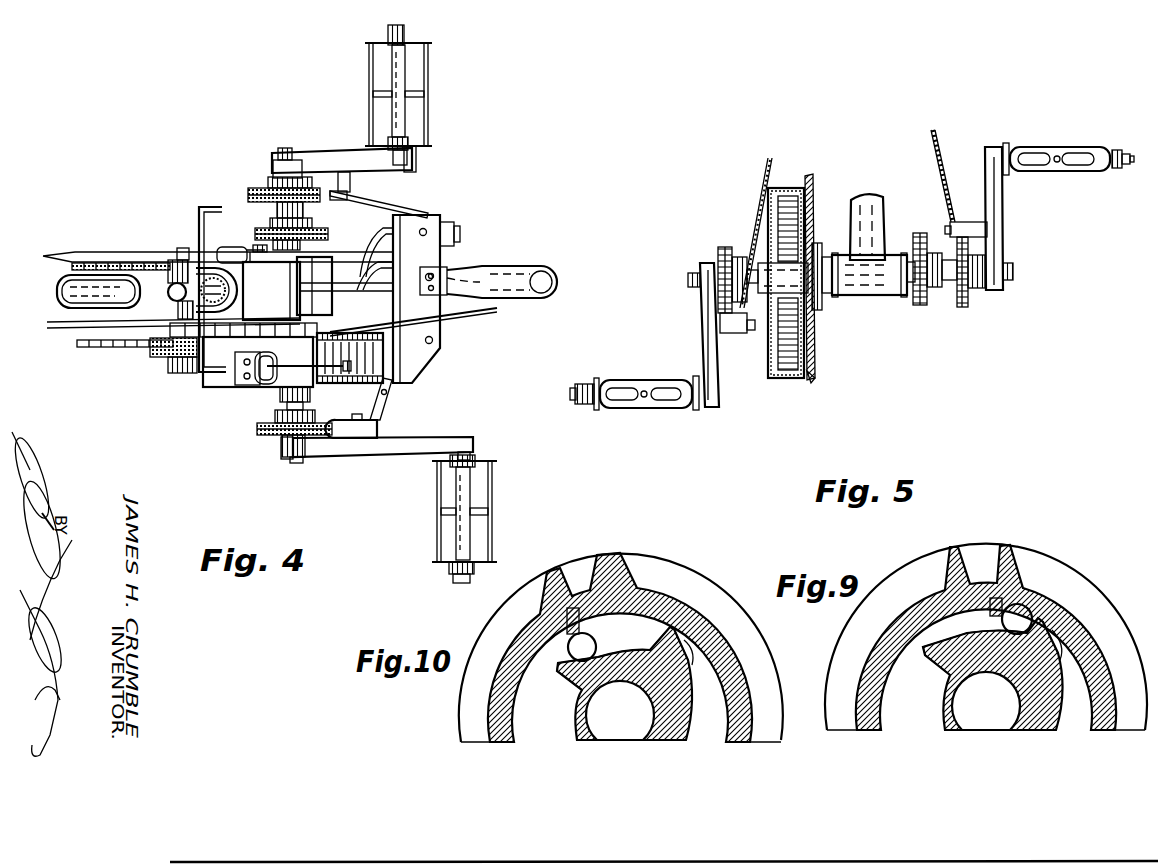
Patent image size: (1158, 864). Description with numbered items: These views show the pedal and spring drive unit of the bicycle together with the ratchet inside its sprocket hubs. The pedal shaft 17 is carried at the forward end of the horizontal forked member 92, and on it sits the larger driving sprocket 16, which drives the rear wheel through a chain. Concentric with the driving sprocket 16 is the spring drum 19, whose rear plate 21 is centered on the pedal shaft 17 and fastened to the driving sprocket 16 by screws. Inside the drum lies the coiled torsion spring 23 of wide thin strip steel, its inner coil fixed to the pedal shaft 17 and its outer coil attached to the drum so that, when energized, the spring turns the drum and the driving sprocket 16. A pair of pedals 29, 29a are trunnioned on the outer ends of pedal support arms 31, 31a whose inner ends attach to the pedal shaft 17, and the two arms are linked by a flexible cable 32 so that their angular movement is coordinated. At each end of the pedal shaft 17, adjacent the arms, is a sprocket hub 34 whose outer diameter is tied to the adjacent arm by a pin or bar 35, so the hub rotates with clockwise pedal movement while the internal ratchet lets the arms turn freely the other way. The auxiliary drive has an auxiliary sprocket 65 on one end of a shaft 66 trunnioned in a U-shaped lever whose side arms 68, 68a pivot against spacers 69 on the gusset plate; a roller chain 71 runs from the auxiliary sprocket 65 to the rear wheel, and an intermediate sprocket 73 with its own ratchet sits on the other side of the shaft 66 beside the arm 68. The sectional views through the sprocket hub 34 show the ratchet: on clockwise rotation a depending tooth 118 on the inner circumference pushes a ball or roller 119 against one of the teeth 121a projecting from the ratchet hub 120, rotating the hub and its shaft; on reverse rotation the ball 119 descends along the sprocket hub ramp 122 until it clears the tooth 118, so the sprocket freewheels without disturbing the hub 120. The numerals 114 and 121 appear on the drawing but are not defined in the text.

In FIG. 5, the driving sprocket 16 is at (810, 174).
In FIG. 5, the pedal shaft 17 is at (1013, 272).
In FIG. 5, the spring drum 19 is at (781, 188).
In FIG. 5, the rear plate 21 is at (816, 378).
In FIG. 5, the coiled torsion spring 23 is at (790, 345).
In FIG. 5, the pedal 29 is at (614, 411).
In FIG. 5, the pedal 29a is at (1052, 172).
In FIG. 5, the pedal support arm 31 is at (708, 357).
In FIG. 5, the pedal support arm 31a is at (1002, 222).
In FIG. 4, the flexible cable 32 is at (377, 205).
In FIG. 5, the sprocket hub 34 is at (727, 250).
In FIG. 10, the sprocket hub 34 is at (620, 590).
In FIG. 9, the sprocket hub 34 is at (1008, 595).
In FIG. 4, the pin or bar 35 is at (375, 425).
In FIG. 5, the pin or bar 35 is at (727, 333).
In FIG. 4, the auxiliary sprocket 65 is at (177, 257).
In FIG. 4, the shaft 66 is at (175, 305).
In FIG. 4, the side arm 68 is at (236, 327).
In FIG. 4, the side arm 68a is at (226, 255).
In FIG. 4, the spacer 69 is at (328, 268).
In FIG. 4, the roller chain 71 is at (118, 262).
In FIG. 4, the intermediate sprocket 73 is at (162, 352).
In FIG. 5, the horizontal forked member 92 is at (860, 197).
In FIG. 5, the sprocket 114 is at (936, 305).
In FIG. 10, the depending tooth 118 is at (574, 618).
In FIG. 9, the depending tooth 118 is at (990, 606).
In FIG. 10, the ball or roller 119 is at (578, 651).
In FIG. 9, the ball or roller 119 is at (1004, 623).
In FIG. 10, the ratchet hub 120 is at (667, 737).
In FIG. 9, the ratchet hub 120 is at (1037, 723).
In FIG. 10, the arm 121 is at (560, 663).
In FIG. 9, the arm 121 is at (927, 653).
In FIG. 10, the tooth 121a is at (685, 656).
In FIG. 9, the tooth 121a is at (1057, 642).
In FIG. 10, the sprocket hub ramp 122 is at (612, 645).
In FIG. 9, the sprocket hub ramp 122 is at (967, 648).